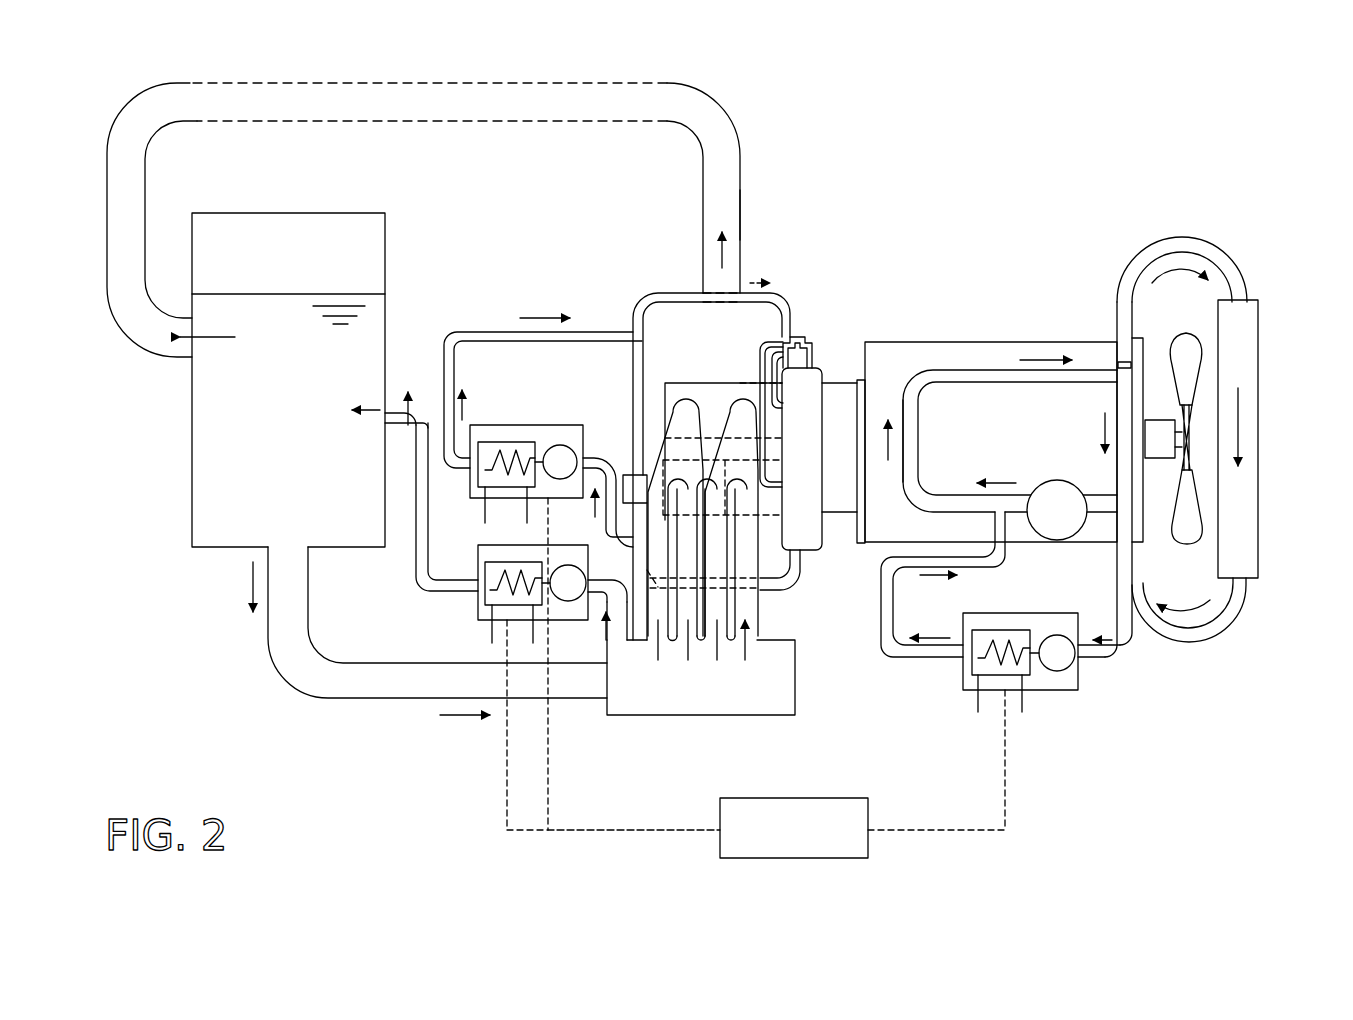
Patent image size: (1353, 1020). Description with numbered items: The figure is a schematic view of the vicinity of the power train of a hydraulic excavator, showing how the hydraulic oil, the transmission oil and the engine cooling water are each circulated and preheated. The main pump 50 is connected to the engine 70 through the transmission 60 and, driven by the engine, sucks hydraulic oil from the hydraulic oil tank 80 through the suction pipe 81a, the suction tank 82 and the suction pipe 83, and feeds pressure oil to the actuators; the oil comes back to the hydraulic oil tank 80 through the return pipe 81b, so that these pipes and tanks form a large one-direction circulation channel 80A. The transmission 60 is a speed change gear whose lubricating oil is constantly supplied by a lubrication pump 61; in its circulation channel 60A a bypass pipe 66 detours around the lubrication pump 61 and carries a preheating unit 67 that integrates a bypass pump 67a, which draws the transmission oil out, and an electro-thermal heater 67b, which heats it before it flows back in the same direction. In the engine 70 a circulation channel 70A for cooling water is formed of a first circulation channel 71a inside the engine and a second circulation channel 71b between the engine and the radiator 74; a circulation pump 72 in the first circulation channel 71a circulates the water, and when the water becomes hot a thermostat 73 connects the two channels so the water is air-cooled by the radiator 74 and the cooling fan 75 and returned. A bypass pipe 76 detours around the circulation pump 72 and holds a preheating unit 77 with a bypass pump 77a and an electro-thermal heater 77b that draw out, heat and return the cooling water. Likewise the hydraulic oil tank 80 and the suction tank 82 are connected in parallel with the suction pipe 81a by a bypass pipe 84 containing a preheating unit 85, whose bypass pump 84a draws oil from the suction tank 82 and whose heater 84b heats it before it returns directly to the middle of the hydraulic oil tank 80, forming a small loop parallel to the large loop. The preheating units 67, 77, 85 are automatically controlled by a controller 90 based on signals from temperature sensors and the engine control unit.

The hydraulic oil tank 80 is at (330, 213).
The suction pipe 81a is at (396, 698).
The return pipe 81b is at (703, 184).
The circulation channel 80A is at (744, 212).
The circulation channel 60A is at (665, 292).
The main pump 50 is at (672, 383).
The transmission 60 is at (823, 373).
The lubrication pump 61 is at (613, 452).
The bypass pipe 66 is at (495, 332).
The preheating unit 67 is at (527, 593).
The bypass pump 67a is at (561, 446).
The heater 67b is at (497, 442).
The engine 70 is at (950, 342).
The circulation channel 70A is at (995, 364).
The first circulation channel 71a is at (922, 380).
The second circulation channel 71b is at (1158, 238).
The circulation pump 72 is at (1055, 540).
The thermostat 73 is at (1118, 362).
The radiator 74 is at (1250, 372).
The cooling fan 75 is at (1188, 545).
The bypass pipe 76 is at (912, 659).
The preheating unit 77 is at (1047, 721).
The bypass pump 77a is at (1055, 671).
The heater 77b is at (1000, 676).
The suction tank 82 is at (705, 698).
The suction pipe 83 is at (750, 602).
The bypass pipe 84 is at (425, 582).
The bypass pump 84a is at (568, 601).
The heater 84b is at (500, 606).
The preheating unit 85 is at (535, 674).
The controller 90 is at (756, 828).